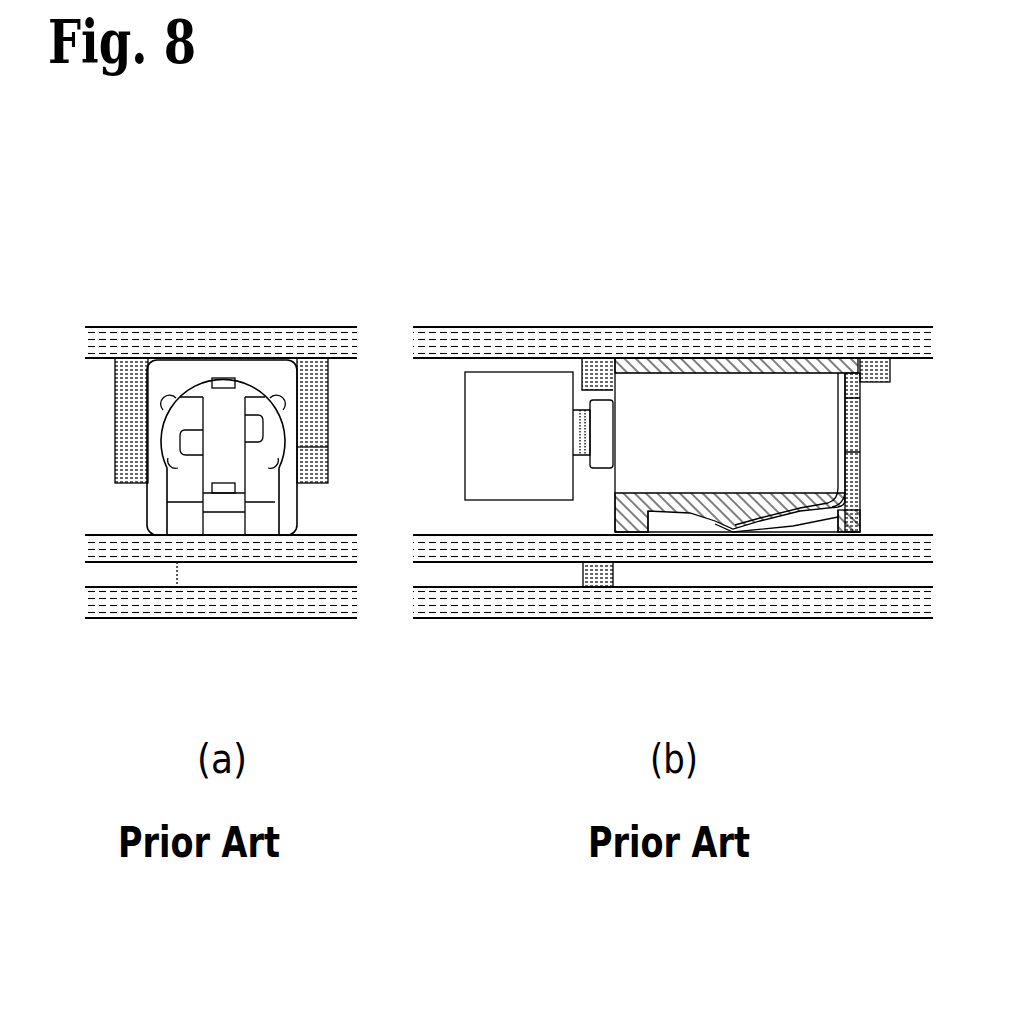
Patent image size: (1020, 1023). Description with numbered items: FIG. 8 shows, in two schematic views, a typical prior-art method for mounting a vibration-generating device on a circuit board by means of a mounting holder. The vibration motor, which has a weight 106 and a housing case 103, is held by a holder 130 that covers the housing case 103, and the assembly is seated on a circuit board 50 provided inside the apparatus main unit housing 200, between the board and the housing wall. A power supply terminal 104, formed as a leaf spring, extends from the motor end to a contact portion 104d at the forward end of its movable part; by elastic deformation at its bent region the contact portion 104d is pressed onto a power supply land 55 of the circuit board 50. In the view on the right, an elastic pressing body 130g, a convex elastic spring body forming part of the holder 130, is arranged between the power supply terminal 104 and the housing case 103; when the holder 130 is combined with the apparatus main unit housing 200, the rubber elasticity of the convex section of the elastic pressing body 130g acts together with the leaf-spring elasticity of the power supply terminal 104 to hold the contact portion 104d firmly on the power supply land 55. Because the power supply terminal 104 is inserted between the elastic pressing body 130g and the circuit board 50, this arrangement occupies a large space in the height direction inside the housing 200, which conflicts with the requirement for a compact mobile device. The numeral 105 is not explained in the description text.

The holder 130 is at (173, 371).
The contact 105 is at (222, 398).
The apparatus main unit housing 200 is at (267, 327).
The circuit board 50 is at (337, 534).
The power supply terminal 104 is at (168, 618).
The weight 106 is at (472, 372).
The housing case 103 is at (735, 390).
The elastic pressing body 130g is at (744, 503).
The contact portion 104d is at (731, 536).
The power supply land 55 is at (757, 536).